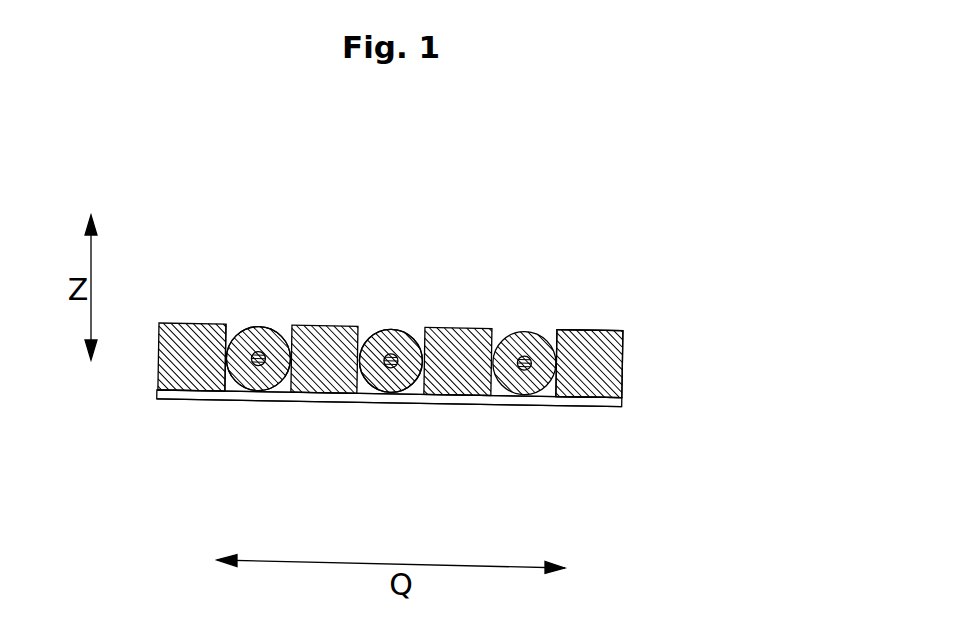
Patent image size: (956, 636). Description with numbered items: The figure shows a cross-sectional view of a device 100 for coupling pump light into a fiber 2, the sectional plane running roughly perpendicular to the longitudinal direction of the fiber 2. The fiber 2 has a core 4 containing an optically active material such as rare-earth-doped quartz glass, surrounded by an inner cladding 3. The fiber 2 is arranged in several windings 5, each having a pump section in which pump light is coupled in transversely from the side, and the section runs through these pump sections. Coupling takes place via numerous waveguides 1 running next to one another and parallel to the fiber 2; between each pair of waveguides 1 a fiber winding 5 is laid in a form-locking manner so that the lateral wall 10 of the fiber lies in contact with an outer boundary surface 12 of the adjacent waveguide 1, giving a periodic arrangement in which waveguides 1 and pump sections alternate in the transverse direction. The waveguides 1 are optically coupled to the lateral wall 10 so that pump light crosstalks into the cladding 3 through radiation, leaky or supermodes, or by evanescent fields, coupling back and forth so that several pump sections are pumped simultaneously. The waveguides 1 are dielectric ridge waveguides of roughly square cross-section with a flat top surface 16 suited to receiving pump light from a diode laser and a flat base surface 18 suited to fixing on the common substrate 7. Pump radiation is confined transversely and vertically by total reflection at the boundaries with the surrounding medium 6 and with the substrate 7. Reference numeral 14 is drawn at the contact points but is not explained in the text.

The device 100 is at (580, 228).
The waveguide 1 is at (178, 318).
The fiber 2 is at (236, 400).
The winding 5 is at (389, 440).
The cladding 3 is at (227, 363).
The core 4 is at (261, 367).
The surrounding medium 6 is at (611, 330).
The substrate 7 is at (567, 410).
The lateral wall 10 is at (286, 334).
The outer boundary surface 12 is at (233, 335).
The contact point 14 is at (369, 335).
The top surface 16 is at (586, 331).
The base surface 18 is at (603, 405).